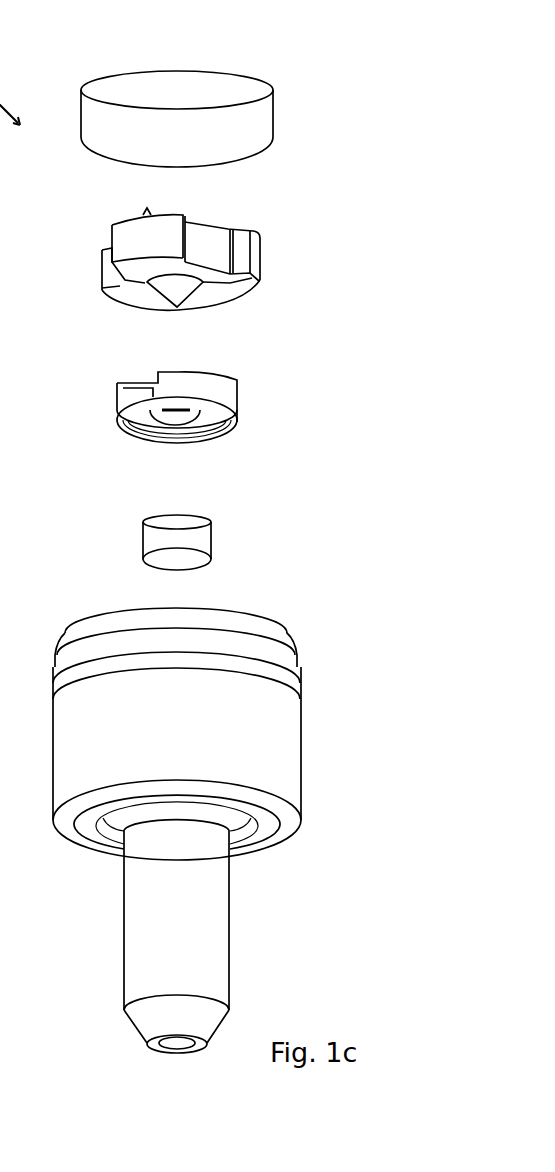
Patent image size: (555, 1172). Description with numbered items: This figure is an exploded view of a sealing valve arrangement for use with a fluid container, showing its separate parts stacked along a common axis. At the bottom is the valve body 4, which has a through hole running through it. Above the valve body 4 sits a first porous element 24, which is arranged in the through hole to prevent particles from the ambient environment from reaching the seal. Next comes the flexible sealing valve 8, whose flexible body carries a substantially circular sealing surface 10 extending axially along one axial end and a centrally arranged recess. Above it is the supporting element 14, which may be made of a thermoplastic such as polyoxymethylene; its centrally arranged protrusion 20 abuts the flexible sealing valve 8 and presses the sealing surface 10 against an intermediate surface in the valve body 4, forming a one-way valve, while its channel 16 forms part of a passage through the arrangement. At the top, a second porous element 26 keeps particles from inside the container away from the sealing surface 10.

The valve body 4 is at (262, 743).
The flexible sealing valve 8 is at (230, 390).
The sealing surface 10 is at (222, 440).
The supporting element 14 is at (248, 250).
The channel 16 is at (215, 237).
The centrally arranged protrusion 20 is at (172, 290).
The first porous element 24 is at (202, 538).
The second porous element 26 is at (192, 90).